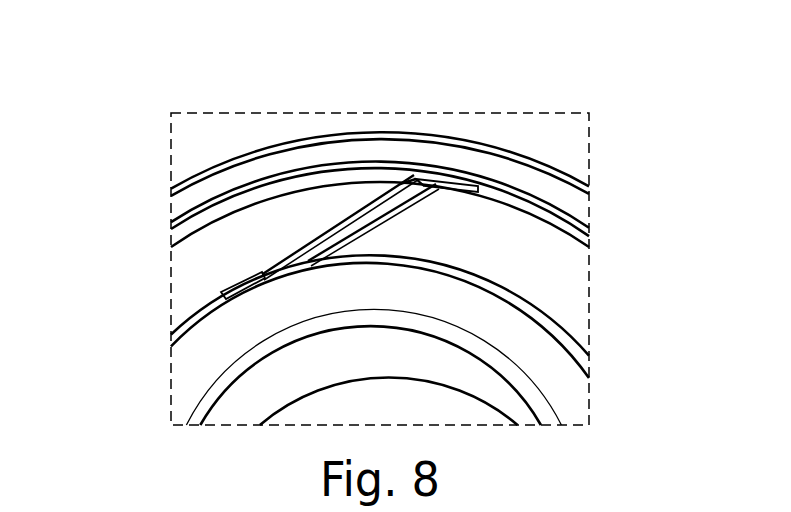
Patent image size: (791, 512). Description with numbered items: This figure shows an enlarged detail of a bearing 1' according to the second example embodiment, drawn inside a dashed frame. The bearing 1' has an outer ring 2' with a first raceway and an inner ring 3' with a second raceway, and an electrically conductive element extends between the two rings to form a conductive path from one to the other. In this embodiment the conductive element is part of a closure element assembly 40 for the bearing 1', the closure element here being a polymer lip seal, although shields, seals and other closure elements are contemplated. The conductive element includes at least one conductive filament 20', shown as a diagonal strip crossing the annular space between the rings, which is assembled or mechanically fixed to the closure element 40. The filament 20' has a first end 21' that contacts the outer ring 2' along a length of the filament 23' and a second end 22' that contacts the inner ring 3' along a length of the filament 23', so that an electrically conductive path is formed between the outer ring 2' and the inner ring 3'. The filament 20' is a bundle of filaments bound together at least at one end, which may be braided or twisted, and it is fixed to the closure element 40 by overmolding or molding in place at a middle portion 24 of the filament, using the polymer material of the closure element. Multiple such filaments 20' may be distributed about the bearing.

The bearing 1' is at (408, 218).
The outer ring 2' is at (431, 179).
The inner ring 3' is at (430, 340).
The closure element assembly 40 is at (540, 263).
The conductive filament 20' is at (462, 120).
The first end 21' is at (166, 248).
The second end 22' is at (443, 157).
The length of the filament 23' is at (421, 117).
The middle portion 24 is at (357, 219).